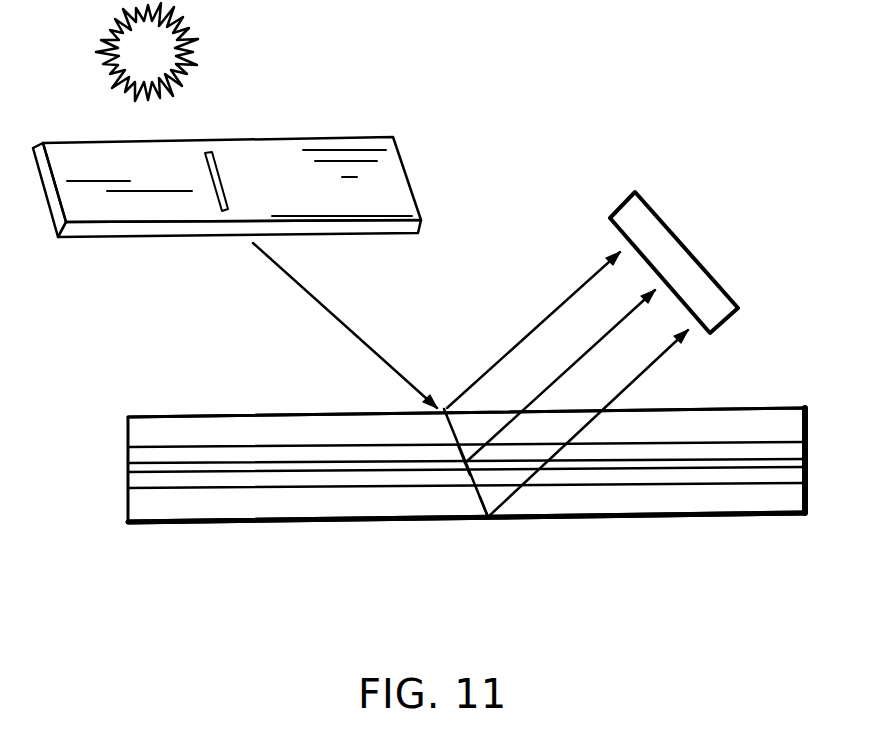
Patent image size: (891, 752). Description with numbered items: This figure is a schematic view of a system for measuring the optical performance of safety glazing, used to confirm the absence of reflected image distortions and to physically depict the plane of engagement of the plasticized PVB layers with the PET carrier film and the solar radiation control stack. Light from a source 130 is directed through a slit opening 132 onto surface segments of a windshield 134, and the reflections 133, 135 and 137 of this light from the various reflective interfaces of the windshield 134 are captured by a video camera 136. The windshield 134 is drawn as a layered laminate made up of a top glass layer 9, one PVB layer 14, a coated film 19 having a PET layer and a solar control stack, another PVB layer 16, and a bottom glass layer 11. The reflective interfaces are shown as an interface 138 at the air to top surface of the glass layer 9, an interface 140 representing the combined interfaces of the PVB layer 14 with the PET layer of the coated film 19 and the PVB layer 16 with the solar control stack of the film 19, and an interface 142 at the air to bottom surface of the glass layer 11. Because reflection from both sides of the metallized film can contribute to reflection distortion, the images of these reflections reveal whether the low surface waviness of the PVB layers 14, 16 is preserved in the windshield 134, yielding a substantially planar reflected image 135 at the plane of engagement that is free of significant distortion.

The light source 130 is at (198, 47).
The slit opening 132 is at (213, 168).
The windshield 134 is at (424, 443).
The glass layer 9 is at (230, 427).
The PVB layer 14 is at (137, 457).
The coated film 19 is at (137, 466).
The PVB layer 16 is at (137, 483).
The glass layer 11 is at (228, 513).
The reflective interface 138 is at (445, 407).
The reflective interface 140 is at (462, 463).
The reflective interface 142 is at (487, 520).
The reflection 135 is at (615, 327).
The reflection 133 is at (550, 316).
The reflection 137 is at (657, 360).
The video camera 136 is at (627, 213).